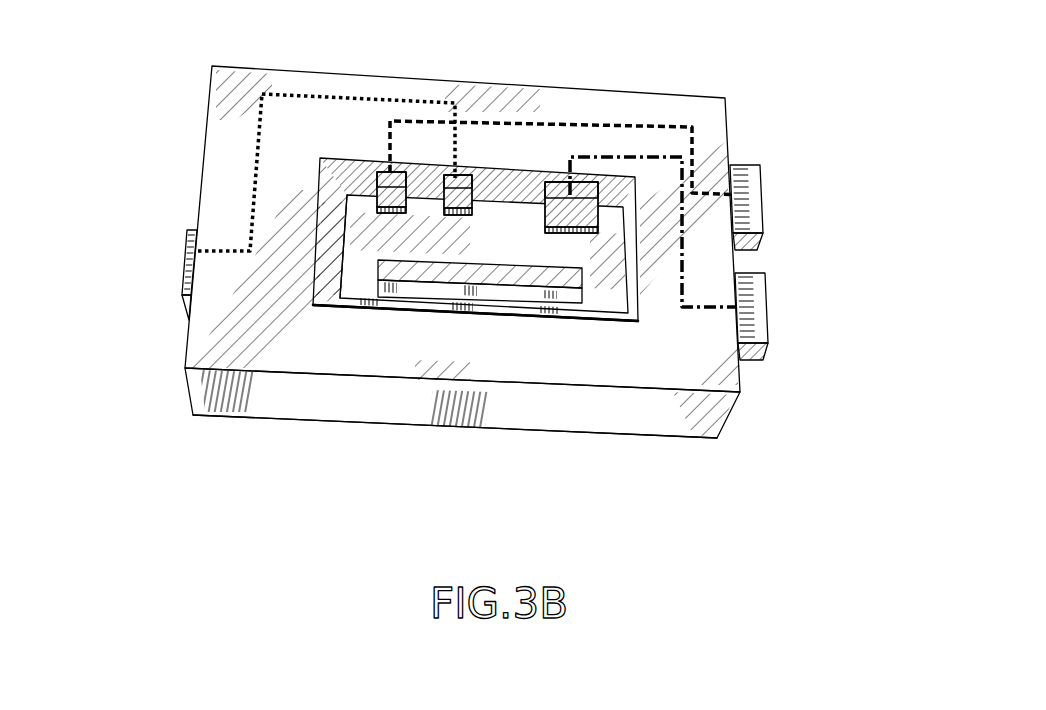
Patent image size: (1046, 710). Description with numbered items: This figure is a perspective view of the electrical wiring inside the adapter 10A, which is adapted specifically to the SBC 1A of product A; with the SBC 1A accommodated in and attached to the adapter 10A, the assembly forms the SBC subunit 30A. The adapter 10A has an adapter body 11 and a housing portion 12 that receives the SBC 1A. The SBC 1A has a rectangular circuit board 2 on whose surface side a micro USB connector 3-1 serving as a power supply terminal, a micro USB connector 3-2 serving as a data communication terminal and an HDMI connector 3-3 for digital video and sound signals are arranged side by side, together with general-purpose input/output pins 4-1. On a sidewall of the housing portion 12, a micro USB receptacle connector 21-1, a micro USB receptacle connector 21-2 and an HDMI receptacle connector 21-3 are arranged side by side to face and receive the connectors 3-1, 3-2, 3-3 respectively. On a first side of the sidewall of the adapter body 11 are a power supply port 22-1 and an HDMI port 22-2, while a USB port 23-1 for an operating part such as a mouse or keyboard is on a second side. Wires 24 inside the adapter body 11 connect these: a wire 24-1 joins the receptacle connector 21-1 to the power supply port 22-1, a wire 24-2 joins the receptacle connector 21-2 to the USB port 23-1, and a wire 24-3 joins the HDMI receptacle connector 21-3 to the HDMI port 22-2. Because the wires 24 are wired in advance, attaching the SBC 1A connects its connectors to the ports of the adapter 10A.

The adapter 10A is at (634, 91).
The adapter body 11 is at (540, 415).
The housing portion 12 is at (633, 293).
The SBC 1A is at (628, 328).
The circuit board 2 is at (360, 283).
The micro USB connector 3-1 is at (393, 200).
The micro USB connector 3-2 is at (457, 215).
The HDMI connector 3-3 is at (578, 222).
The general-purpose input/output pins 4-1 is at (497, 278).
The micro USB receptacle connector 21-1 is at (400, 177).
The micro USB receptacle connector 21-2 is at (464, 178).
The HDMI receptacle connector 21-3 is at (558, 183).
The power supply port 22-1 is at (753, 212).
The HDMI port 22-2 is at (753, 283).
The USB port 23-1 is at (185, 289).
The wires 24 is at (325, 86).
The wire 24-1 is at (693, 142).
The wire 24-2 is at (253, 155).
The wire 24-3 is at (683, 210).
The SBC subunit 30A is at (776, 419).